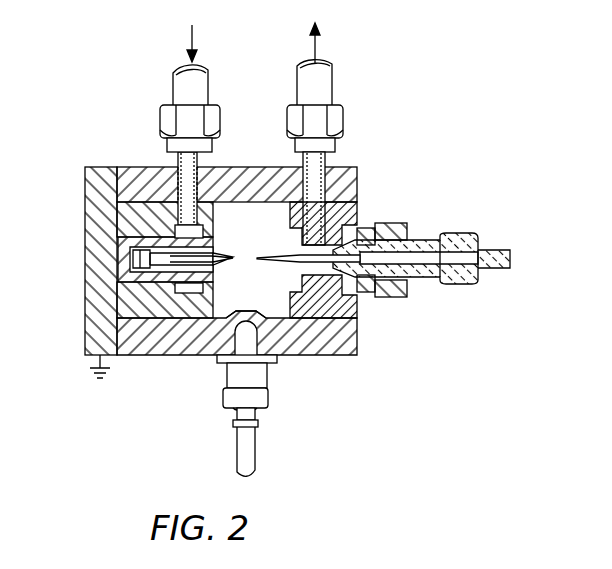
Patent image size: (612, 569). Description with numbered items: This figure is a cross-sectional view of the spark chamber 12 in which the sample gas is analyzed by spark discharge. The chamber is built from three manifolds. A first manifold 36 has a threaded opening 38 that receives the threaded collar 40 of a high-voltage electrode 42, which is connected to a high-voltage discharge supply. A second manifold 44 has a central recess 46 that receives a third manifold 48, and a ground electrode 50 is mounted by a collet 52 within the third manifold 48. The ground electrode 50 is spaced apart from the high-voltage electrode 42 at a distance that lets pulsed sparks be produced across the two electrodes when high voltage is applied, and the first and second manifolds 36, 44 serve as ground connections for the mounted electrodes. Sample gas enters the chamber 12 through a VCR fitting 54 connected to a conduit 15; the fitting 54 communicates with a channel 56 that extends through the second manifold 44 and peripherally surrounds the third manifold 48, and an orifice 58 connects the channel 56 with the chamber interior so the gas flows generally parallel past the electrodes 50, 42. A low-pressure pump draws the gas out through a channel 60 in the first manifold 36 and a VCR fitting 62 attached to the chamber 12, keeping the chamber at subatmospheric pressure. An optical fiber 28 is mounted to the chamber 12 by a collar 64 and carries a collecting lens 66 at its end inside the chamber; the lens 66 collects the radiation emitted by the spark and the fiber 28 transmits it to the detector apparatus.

The spark chamber 12 is at (211, 249).
The conduit 15 is at (208, 85).
The optical fiber 28 is at (257, 438).
The first manifold 36 is at (360, 208).
The threaded opening 38 is at (297, 272).
The threaded collar 40 is at (392, 223).
The high-voltage electrode 42 is at (283, 257).
The second manifold 44 is at (85, 203).
The central recess 46 is at (117, 255).
The third manifold 48 is at (128, 275).
The ground electrode 50 is at (224, 258).
The collet 52 is at (165, 175).
The VCR fitting 54 is at (220, 118).
The channel 56 is at (200, 175).
The orifice 58 is at (205, 232).
The channel 60 is at (358, 172).
The VCR fitting 62 is at (343, 118).
The collar 64 is at (268, 396).
The collecting lens 66 is at (246, 320).